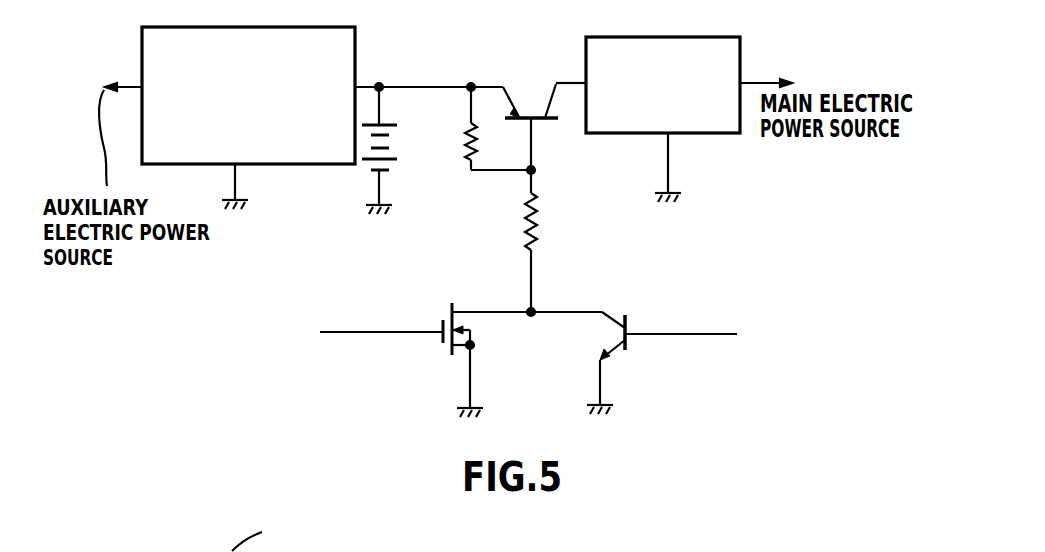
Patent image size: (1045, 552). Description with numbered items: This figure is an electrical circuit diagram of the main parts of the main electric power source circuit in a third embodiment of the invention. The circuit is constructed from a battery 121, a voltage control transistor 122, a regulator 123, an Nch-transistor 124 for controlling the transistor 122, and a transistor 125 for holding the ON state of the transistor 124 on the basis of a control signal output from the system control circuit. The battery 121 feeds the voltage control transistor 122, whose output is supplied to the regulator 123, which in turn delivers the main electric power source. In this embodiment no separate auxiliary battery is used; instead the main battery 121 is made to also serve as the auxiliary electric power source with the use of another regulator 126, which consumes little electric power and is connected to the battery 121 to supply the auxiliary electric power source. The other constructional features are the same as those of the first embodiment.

The battery 121 is at (397, 135).
The voltage control transistor 122 is at (529, 108).
The regulator 123 is at (713, 134).
The Nch-transistor 124 is at (442, 343).
The transistor 125 is at (628, 344).
The regulator 126 is at (273, 164).